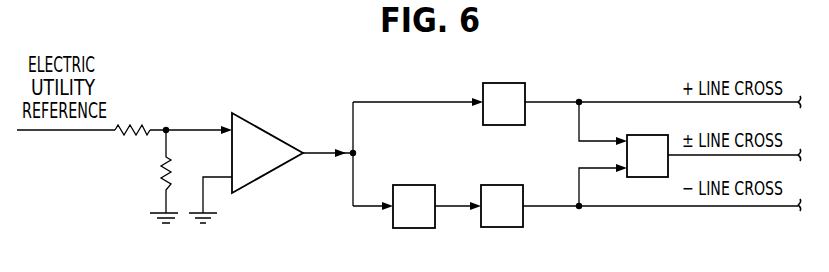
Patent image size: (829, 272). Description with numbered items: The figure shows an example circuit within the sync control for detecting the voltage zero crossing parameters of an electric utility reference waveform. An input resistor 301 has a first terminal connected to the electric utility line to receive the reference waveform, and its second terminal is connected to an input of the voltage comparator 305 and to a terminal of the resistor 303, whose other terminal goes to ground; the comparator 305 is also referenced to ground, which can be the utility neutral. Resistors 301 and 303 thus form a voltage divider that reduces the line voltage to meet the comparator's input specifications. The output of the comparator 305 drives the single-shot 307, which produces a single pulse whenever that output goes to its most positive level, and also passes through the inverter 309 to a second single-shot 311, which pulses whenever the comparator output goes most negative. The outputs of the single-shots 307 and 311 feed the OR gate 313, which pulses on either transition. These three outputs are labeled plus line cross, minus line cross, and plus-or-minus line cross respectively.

The input resistor 301 is at (133, 120).
The resistor 303 is at (158, 165).
The voltage comparator 305 is at (277, 137).
The single-shot 307 is at (525, 88).
The inverter 309 is at (407, 185).
The second single-shot 311 is at (523, 220).
The OR gate 313 is at (637, 178).